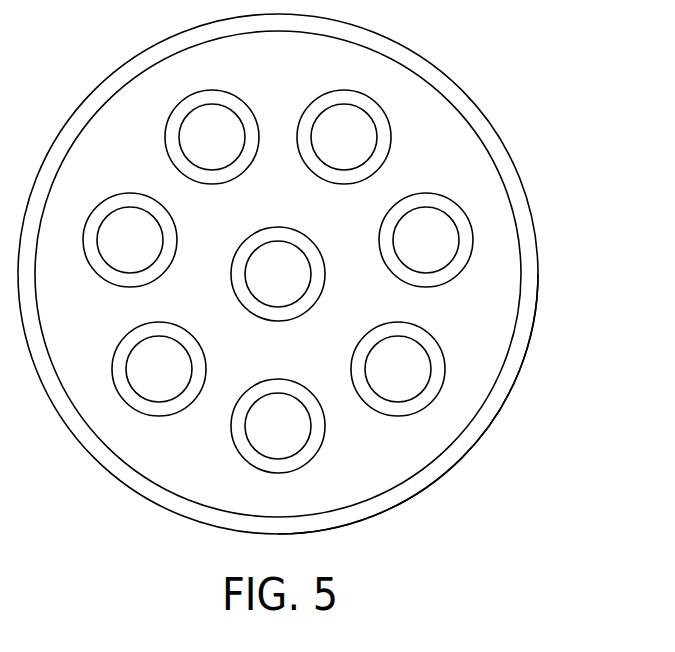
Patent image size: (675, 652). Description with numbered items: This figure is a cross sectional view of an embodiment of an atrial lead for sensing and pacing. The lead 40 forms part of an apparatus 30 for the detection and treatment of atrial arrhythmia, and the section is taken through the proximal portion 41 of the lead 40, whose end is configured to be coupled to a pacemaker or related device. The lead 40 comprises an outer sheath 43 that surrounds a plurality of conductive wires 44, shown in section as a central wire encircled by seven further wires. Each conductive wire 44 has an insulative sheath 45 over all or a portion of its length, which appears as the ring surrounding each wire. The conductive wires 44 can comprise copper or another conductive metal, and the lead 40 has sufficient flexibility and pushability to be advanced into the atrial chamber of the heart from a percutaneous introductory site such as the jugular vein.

The apparatus 30 is at (530, 208).
The lead 40 is at (278, 274).
The proximal portion 41 is at (462, 102).
The outer sheath 43 is at (527, 323).
The conductive wires 44 is at (83, 252).
The insulative sheath 45 is at (427, 399).